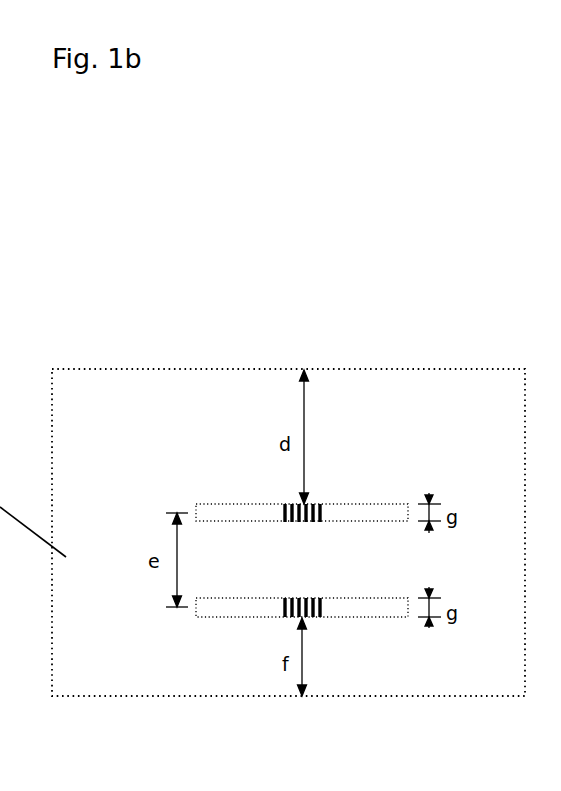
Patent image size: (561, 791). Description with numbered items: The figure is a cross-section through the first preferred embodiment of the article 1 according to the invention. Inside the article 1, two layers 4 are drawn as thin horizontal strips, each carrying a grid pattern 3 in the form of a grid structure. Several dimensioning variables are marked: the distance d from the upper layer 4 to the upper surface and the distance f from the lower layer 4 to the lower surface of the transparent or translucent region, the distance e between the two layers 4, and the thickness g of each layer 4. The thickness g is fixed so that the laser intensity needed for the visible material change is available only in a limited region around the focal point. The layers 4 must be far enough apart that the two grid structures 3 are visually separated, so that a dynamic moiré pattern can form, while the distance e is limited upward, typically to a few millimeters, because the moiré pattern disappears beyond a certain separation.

The article 1 is at (460, 329).
The grid pattern 3 is at (319, 576).
The layer 4 is at (227, 606).